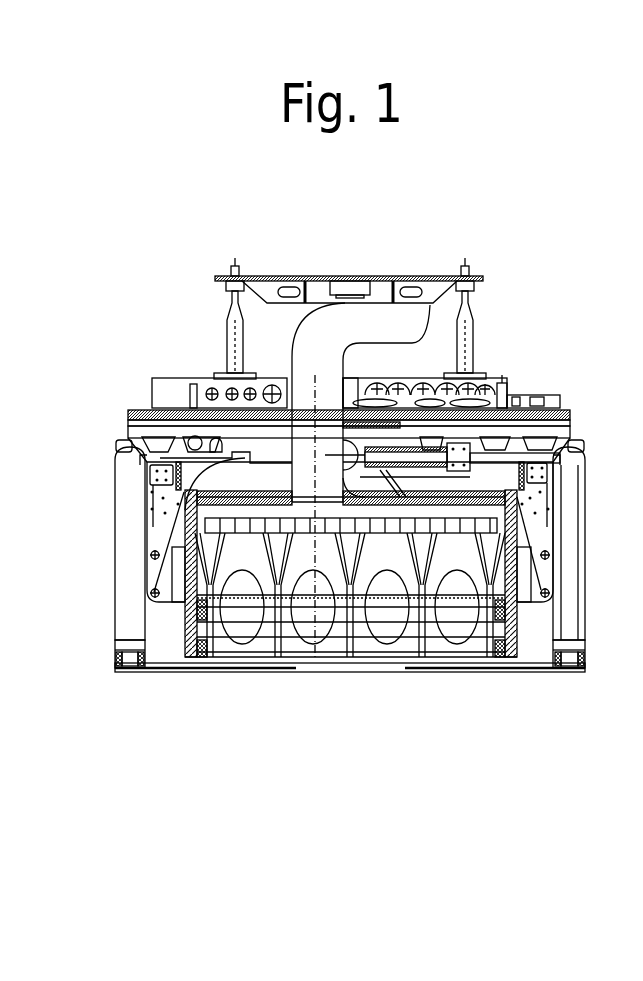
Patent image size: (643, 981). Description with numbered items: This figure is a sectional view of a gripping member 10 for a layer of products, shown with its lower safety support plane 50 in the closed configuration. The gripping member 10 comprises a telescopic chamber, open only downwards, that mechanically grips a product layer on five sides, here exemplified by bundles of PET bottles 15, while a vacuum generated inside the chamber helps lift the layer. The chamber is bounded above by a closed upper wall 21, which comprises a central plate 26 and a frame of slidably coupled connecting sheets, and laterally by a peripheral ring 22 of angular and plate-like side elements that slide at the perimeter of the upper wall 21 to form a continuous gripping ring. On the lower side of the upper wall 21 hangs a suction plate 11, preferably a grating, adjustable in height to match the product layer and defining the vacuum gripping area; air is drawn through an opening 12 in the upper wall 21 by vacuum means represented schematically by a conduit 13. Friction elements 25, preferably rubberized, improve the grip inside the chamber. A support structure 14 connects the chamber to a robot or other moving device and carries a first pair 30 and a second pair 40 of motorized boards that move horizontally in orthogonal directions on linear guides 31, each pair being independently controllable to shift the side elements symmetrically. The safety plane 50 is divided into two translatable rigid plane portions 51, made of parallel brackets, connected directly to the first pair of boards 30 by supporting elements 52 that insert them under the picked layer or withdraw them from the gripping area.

The gripping member 10 is at (566, 268).
The suction plate 11 is at (549, 462).
The opening 12 is at (250, 518).
The conduit 13 is at (313, 355).
The support structure 14 is at (437, 280).
The bundles of PET bottles 15 is at (255, 597).
The upper wall 21 is at (208, 490).
The peripheral ring 22 is at (519, 621).
The friction elements 25 is at (190, 608).
The central plate 26 is at (402, 462).
The first pair of motorized boards 30 is at (540, 546).
The linear guides 31 is at (136, 412).
The second pair of motorized boards 40 is at (373, 488).
The lower safety support plane 50 is at (570, 676).
The rigid plane portions 51 is at (298, 668).
The supporting elements 52 is at (130, 618).